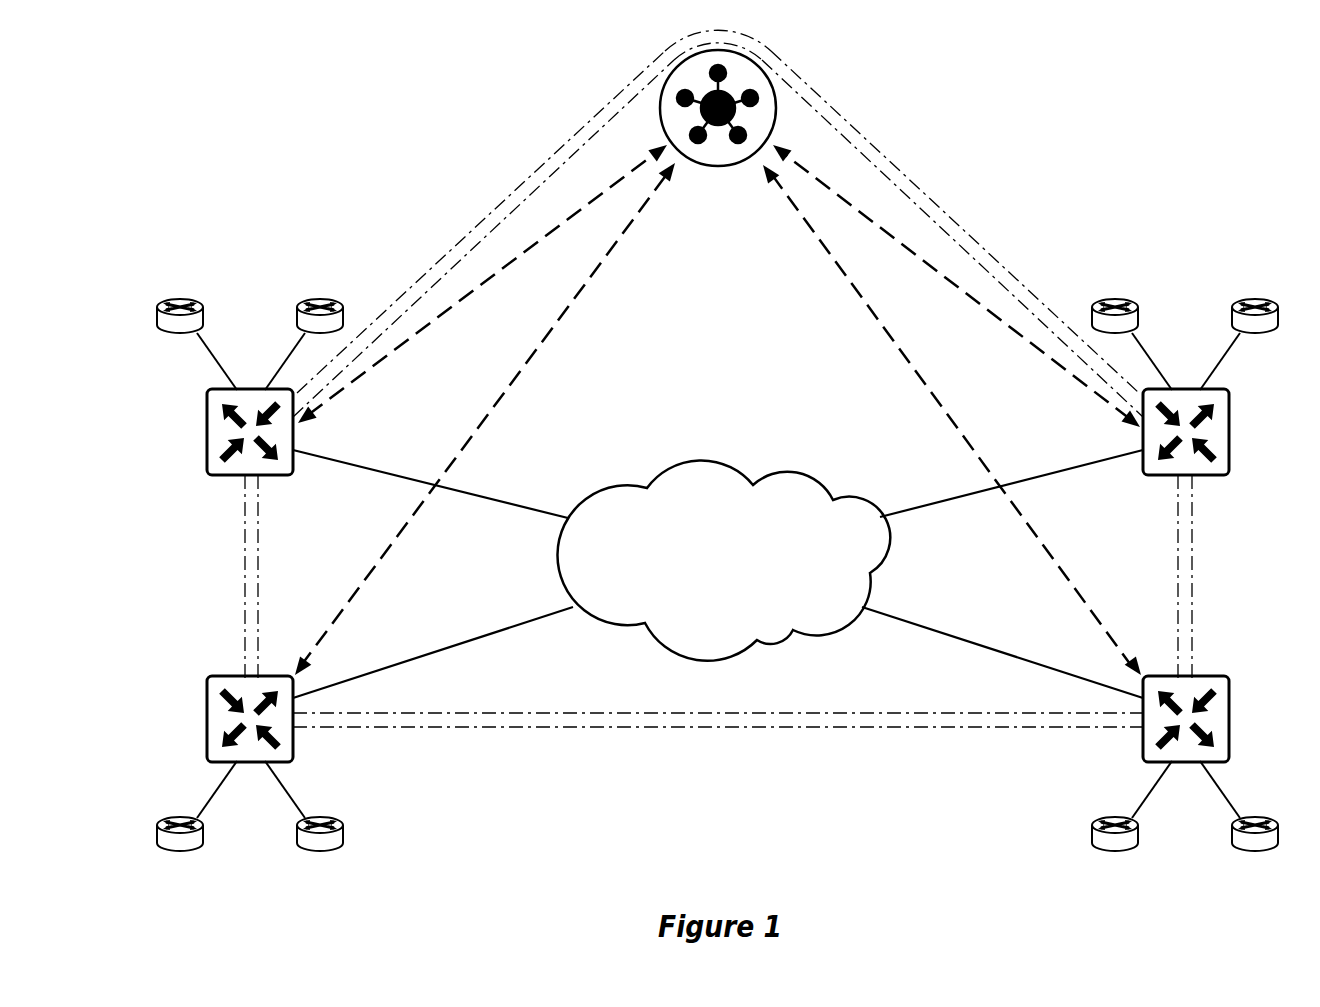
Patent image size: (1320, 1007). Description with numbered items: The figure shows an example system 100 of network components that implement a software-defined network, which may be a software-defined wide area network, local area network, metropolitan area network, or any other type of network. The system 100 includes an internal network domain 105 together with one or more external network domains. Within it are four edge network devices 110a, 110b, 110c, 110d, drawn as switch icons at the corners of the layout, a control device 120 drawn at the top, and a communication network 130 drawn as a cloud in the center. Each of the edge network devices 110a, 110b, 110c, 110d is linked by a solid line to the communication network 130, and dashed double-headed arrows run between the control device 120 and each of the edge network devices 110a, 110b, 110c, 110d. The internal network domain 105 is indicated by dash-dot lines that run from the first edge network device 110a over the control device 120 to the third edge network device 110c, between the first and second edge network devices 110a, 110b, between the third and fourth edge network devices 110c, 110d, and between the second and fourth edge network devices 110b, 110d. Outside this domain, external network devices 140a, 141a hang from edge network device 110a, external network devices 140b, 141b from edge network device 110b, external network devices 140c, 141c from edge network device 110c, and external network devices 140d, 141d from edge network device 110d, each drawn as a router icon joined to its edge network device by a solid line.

The system 100 is at (1234, 97).
The internal network domain 105 is at (940, 210).
The edge network device 110a is at (208, 430).
The edge network device 110b is at (208, 718).
The edge network device 110c is at (1229, 430).
The edge network device 110d is at (1229, 718).
The control device 120 is at (777, 104).
The communication network 130 is at (737, 573).
The external network device 140a is at (179, 298).
The external network device 141a is at (319, 298).
The external network device 140b is at (179, 852).
The external network device 141b is at (319, 852).
The external network device 140c is at (1118, 298).
The external network device 141c is at (1258, 298).
The external network device 140d is at (1118, 852).
The external network device 141d is at (1258, 852).